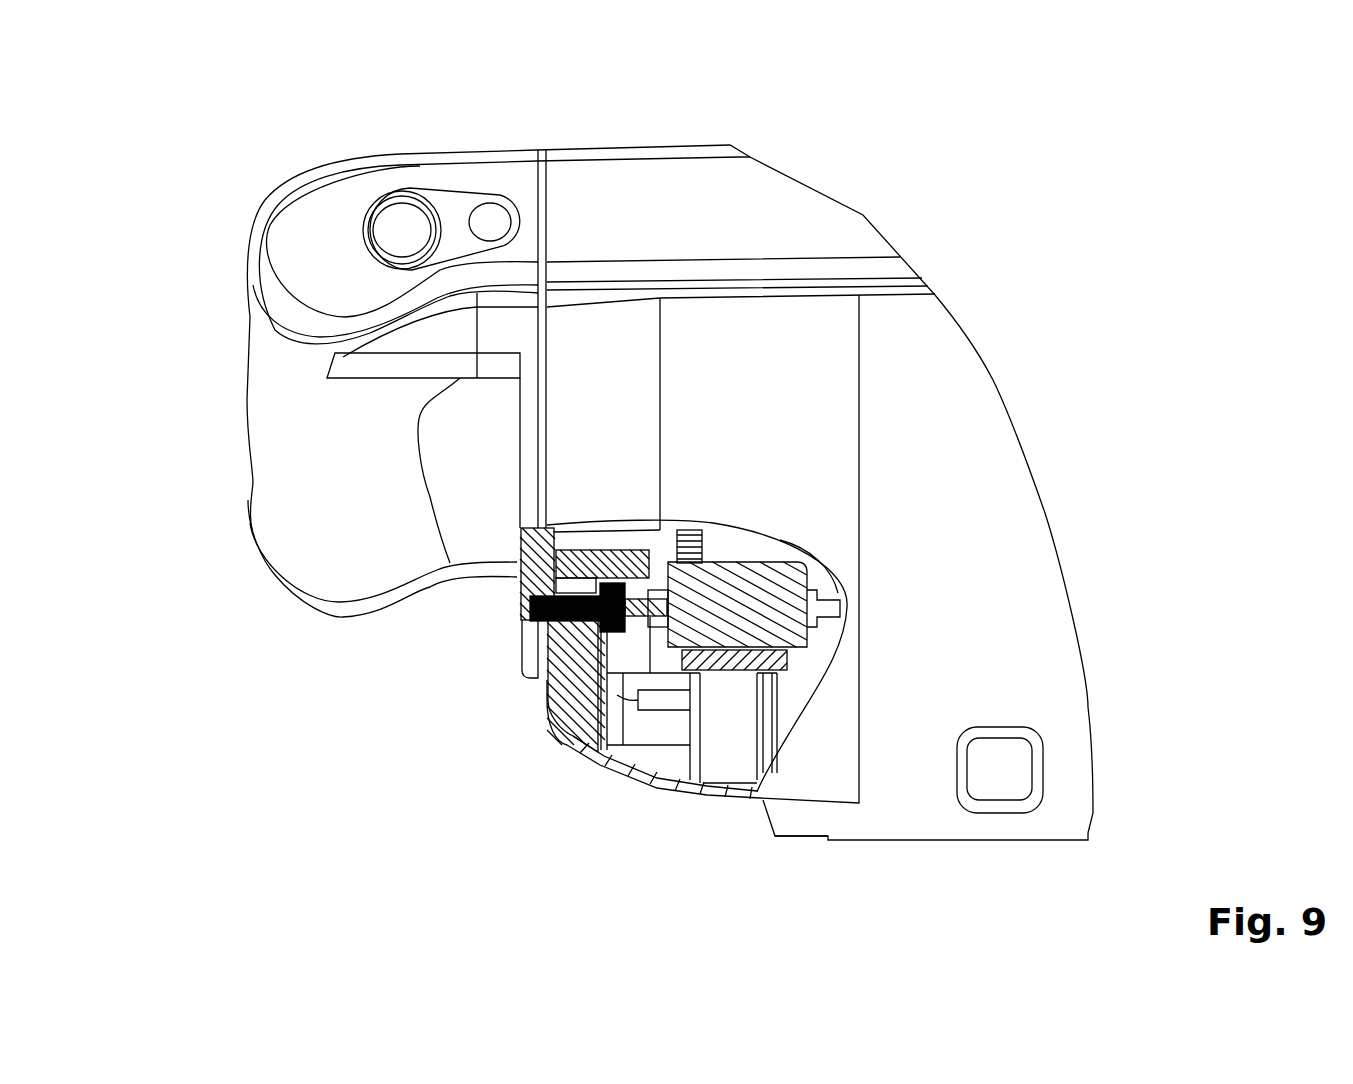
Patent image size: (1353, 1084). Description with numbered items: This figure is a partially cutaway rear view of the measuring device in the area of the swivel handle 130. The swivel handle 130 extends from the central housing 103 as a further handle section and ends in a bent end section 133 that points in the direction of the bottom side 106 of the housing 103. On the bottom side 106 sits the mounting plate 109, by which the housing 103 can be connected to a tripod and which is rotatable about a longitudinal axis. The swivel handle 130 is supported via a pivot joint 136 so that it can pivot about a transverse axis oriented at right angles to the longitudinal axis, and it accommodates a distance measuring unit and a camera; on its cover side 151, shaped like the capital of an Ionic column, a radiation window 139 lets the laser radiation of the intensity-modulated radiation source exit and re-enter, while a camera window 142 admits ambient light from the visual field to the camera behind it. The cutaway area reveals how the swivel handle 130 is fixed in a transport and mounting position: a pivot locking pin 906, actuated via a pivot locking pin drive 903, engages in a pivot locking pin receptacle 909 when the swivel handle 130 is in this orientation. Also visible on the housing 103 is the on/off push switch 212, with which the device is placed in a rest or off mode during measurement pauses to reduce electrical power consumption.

The housing 103 is at (767, 360).
The bottom side 106 is at (807, 842).
The mounting plate 109 is at (897, 841).
The swivel handle 130 is at (222, 392).
The bent end section 133 is at (327, 548).
The pivot joint 136 is at (513, 590).
The radiation window 139 is at (489, 226).
The camera window 142 is at (400, 228).
The cover side 151 is at (645, 197).
The on/off push switch 212 is at (998, 778).
The pivot locking pin drive 903 is at (726, 609).
The pivot locking pin 906 is at (577, 620).
The pivot locking pin receptacle 909 is at (520, 612).